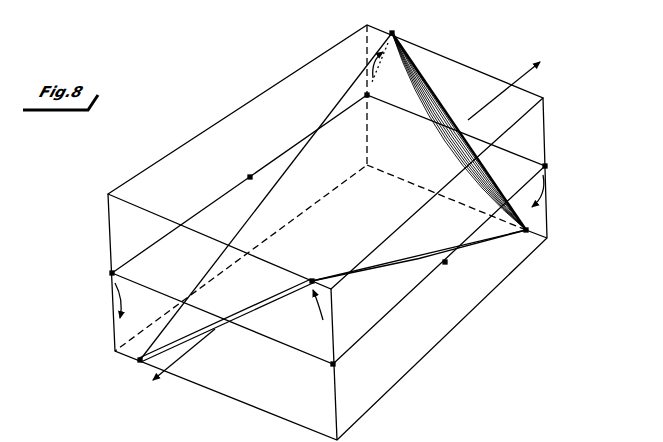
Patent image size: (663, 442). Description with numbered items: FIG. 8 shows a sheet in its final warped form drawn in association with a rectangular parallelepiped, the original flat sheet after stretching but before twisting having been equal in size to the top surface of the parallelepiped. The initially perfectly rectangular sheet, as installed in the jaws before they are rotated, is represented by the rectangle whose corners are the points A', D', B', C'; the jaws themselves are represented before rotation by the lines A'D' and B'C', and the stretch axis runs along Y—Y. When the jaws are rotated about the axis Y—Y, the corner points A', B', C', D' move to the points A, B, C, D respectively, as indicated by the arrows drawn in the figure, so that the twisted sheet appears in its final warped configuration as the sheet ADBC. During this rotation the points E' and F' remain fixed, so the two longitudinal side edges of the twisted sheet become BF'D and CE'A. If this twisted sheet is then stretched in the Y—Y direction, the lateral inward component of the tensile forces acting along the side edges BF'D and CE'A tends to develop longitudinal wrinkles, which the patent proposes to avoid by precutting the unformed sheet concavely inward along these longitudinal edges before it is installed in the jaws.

The corner of warped sheet A is at (308, 269).
The corner of warped sheet B is at (399, 26).
The corner of warped sheet C is at (537, 249).
The corner of warped sheet D is at (133, 366).
The corner of initial rectangular sheet A' is at (341, 369).
The corner of initial rectangular sheet B' is at (378, 85).
The corner of initial rectangular sheet C' is at (553, 161).
The corner of initial rectangular sheet D' is at (103, 268).
The fixed point on longitudinal side edge E' is at (452, 270).
The fixed point on longitudinal side edge F' is at (242, 170).
The stretch axis Y is at (347, 225).